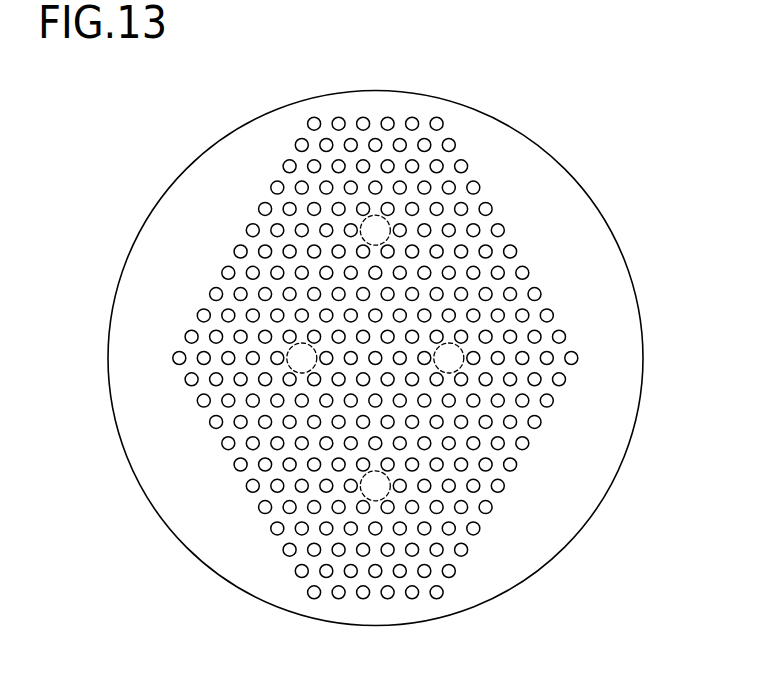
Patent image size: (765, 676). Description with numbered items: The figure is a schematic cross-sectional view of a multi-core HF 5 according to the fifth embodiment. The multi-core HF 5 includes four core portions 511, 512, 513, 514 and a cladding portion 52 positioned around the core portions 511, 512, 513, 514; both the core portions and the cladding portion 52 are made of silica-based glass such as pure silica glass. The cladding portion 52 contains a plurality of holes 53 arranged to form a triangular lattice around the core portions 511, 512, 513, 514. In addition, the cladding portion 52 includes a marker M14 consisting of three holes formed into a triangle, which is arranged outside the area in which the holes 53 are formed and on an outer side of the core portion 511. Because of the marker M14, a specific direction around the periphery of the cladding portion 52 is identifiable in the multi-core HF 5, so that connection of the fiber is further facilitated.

The multi-core HF 5 is at (376, 344).
The cladding portion 52 is at (603, 466).
The holes 53 is at (578, 358).
The core portion 511 is at (384, 216).
The core portion 512 is at (463, 353).
The core portion 513 is at (387, 497).
The core portion 514 is at (287, 355).
The marker M14 is at (578, 271).